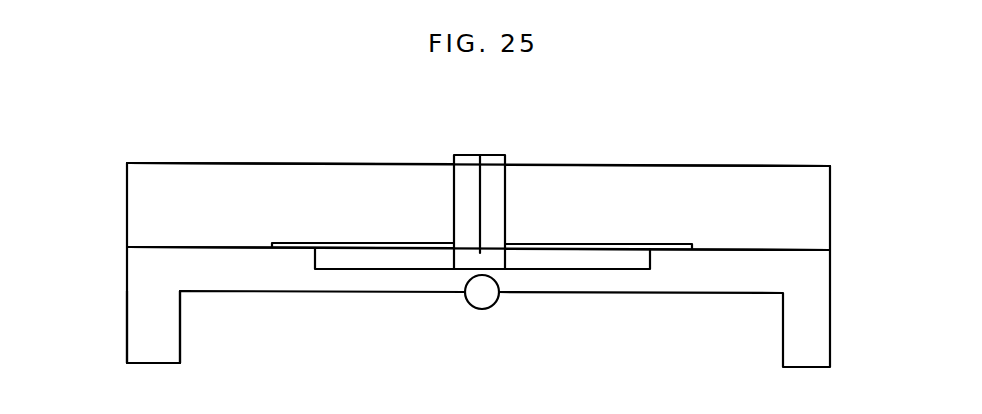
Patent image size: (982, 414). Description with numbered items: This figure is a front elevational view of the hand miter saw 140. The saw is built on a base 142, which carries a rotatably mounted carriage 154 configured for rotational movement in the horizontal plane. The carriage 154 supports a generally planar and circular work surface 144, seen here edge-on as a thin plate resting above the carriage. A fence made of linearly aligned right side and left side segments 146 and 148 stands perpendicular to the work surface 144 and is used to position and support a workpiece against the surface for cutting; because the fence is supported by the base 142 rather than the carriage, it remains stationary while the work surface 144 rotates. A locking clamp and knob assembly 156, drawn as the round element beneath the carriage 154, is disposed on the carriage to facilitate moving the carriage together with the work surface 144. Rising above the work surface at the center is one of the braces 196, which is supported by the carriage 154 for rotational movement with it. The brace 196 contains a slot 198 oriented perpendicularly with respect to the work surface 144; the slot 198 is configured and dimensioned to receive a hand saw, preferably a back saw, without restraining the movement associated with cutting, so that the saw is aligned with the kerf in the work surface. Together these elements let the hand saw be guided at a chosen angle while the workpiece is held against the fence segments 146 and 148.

The hand miter saw 140 is at (92, 187).
The base 142 is at (167, 290).
The work surface 144 is at (554, 247).
The right side fence segment 146 is at (760, 192).
The left side fence segment 148 is at (218, 193).
The carriage 154 is at (528, 258).
The locking clamp and knob assembly 156 is at (468, 300).
The brace 196 is at (468, 185).
The slot 198 is at (480, 190).